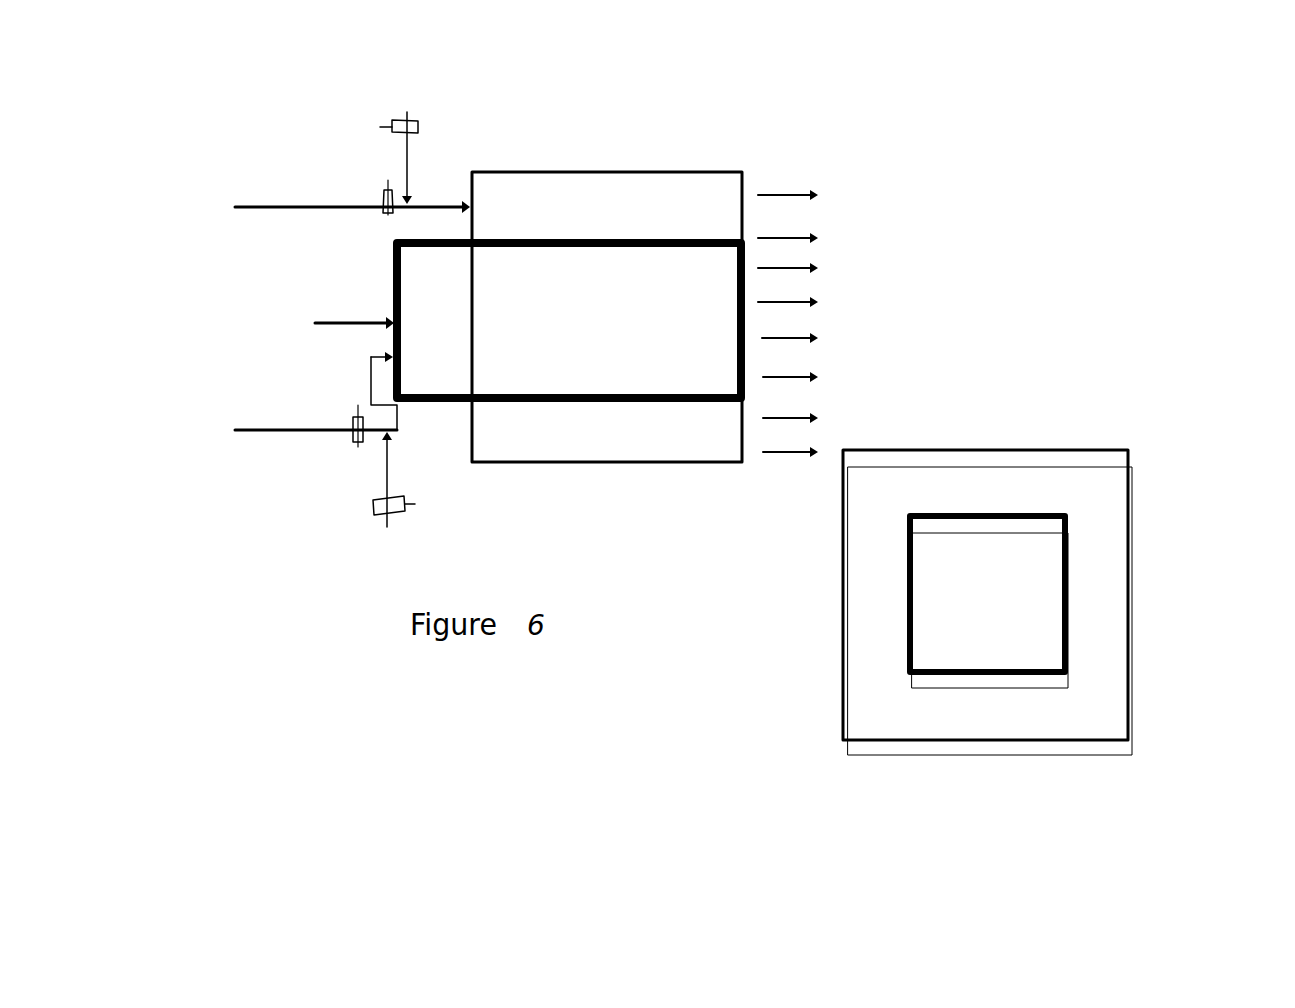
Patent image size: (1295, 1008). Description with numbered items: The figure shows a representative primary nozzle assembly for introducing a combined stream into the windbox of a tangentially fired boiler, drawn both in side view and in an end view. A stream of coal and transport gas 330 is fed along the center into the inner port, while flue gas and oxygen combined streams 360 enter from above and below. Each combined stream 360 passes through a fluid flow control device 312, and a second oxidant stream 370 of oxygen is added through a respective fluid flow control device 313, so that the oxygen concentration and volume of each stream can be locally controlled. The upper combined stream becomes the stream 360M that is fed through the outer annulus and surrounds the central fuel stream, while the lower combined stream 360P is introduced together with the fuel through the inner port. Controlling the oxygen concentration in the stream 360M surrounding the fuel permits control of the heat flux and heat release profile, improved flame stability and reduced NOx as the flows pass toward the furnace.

The fluid flow control device 312 is at (383, 215).
The fluid flow control device 313 is at (418, 125).
The fuel and transport gas stream 330 is at (295, 331).
The combined stream 360 is at (288, 325).
The second oxidant stream 370 is at (390, 323).
The combined stream 360M is at (424, 201).
The combined stream 360P is at (371, 373).